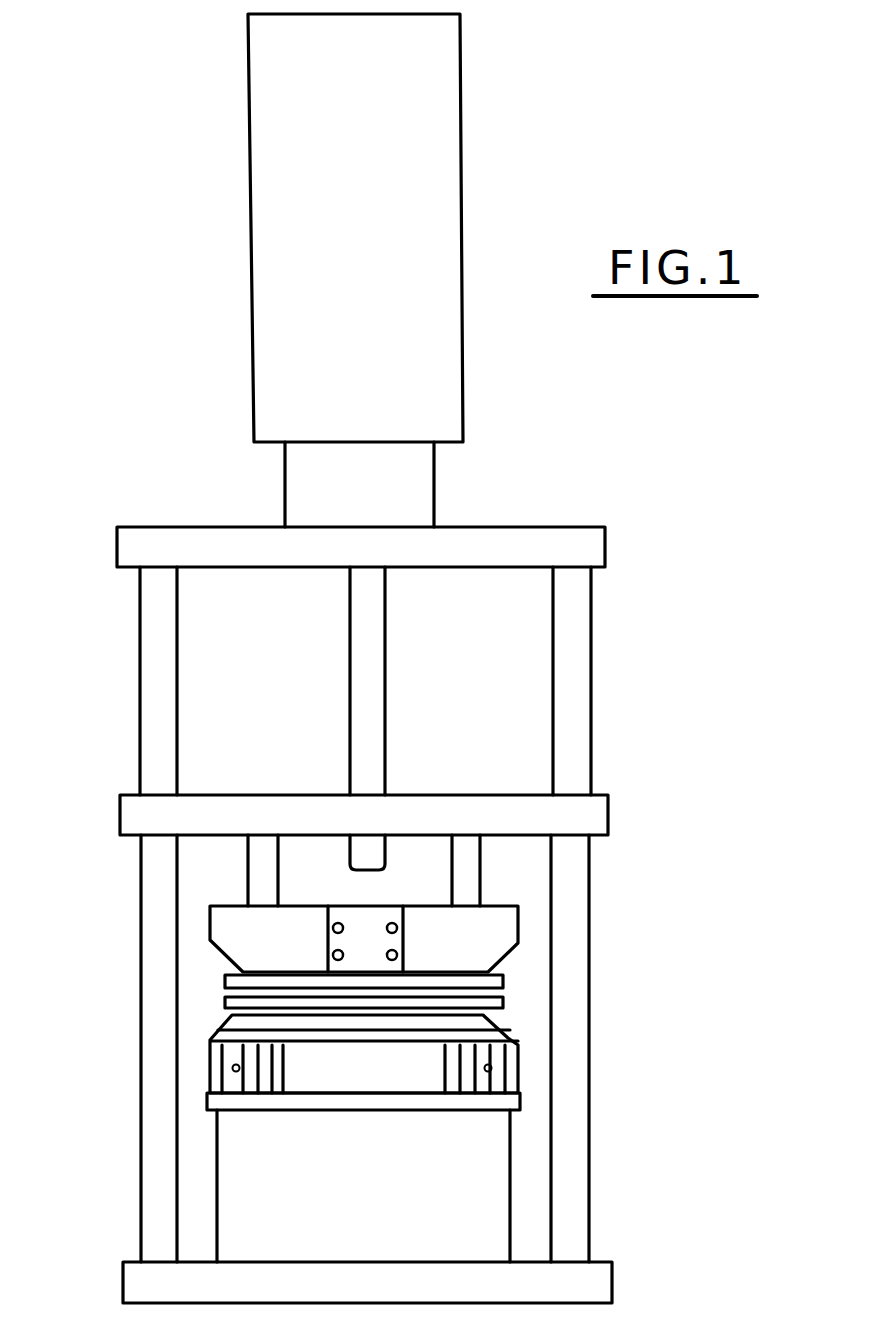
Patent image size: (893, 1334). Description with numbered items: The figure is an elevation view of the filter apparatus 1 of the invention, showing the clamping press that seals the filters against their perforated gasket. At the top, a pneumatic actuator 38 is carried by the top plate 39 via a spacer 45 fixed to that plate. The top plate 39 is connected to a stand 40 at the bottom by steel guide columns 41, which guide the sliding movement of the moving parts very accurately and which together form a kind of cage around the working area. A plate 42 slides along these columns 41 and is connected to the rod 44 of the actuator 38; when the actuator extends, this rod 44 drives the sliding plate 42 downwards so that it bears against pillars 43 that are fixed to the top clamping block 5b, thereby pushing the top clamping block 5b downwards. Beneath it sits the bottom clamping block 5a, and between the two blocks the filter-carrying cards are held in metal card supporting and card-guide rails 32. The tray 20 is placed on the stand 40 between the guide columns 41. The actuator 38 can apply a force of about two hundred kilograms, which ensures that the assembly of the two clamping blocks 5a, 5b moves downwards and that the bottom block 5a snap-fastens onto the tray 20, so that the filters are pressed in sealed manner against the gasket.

The filter apparatus 1 is at (132, 274).
The pneumatic actuator 38 is at (447, 199).
The spacer 45 is at (428, 480).
The top plate 39 is at (510, 541).
The steel guide columns 41 is at (153, 1019).
The rod 44 is at (366, 690).
The sliding plate 42 is at (130, 813).
The pillars 43 is at (473, 864).
The top clamping block 5b is at (514, 960).
The card supporting and card-guide rail 32 is at (226, 980).
The bottom clamping block 5a is at (512, 1036).
The tray 20 is at (386, 1191).
The stand 40 is at (141, 1275).